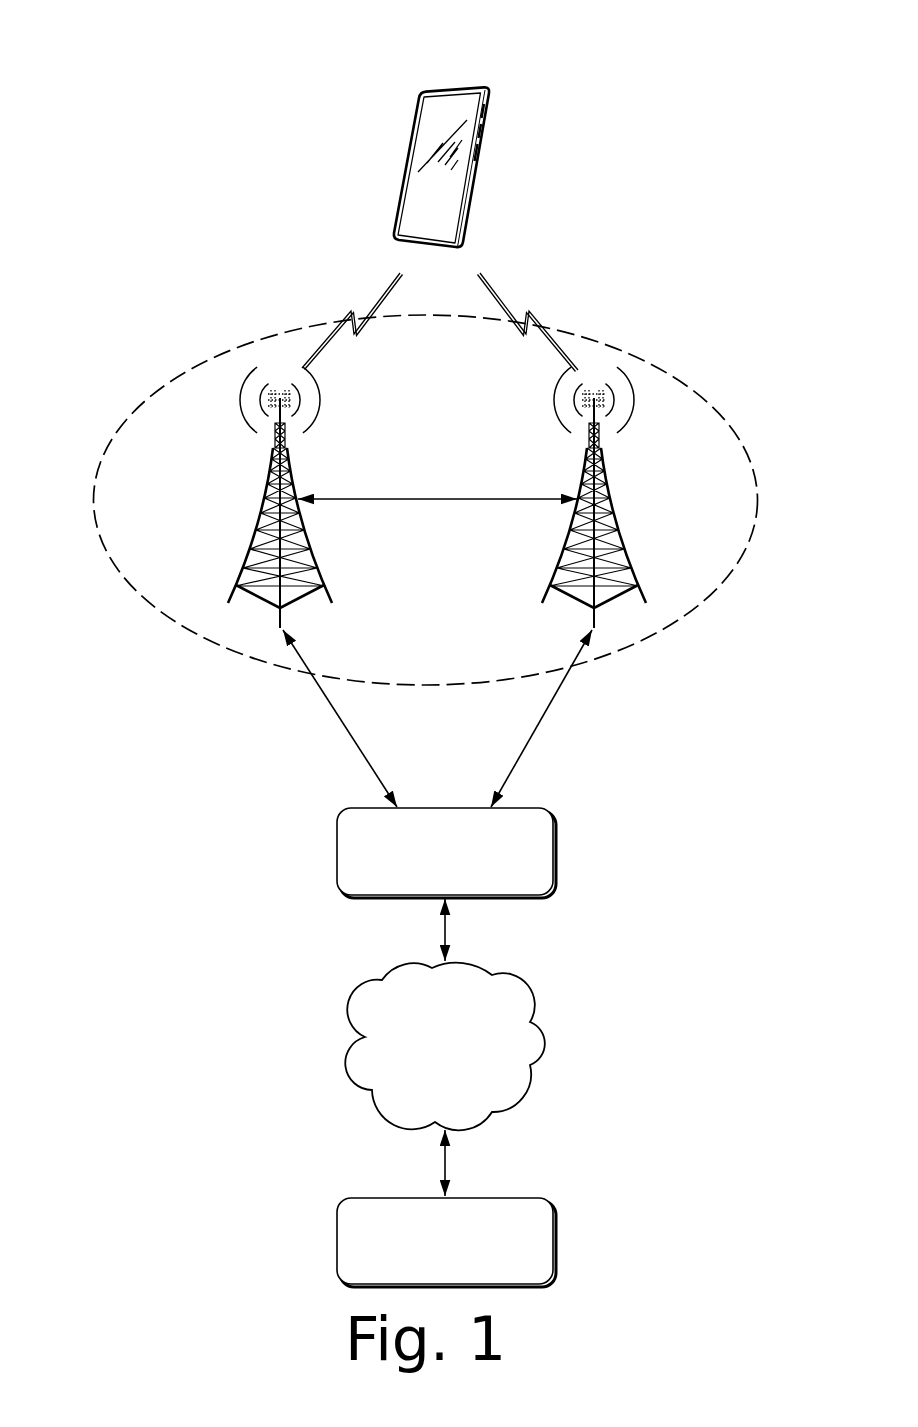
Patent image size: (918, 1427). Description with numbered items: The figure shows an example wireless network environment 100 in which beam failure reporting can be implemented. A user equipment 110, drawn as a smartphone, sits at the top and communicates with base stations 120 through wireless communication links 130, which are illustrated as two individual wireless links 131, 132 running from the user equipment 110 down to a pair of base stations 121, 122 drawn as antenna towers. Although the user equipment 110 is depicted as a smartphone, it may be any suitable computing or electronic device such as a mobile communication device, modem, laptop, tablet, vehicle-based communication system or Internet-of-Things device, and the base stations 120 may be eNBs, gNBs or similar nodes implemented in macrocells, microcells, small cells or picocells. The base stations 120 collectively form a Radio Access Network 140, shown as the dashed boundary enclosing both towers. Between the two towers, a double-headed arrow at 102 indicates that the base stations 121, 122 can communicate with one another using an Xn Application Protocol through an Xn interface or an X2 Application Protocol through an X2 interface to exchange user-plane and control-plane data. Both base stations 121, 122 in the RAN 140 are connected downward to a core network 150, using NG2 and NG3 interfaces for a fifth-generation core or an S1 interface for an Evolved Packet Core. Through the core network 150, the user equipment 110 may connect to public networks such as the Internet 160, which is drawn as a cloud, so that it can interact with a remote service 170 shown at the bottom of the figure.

The environment 100 is at (126, 42).
The user equipment 110 is at (493, 83).
The wireless communication links 130 is at (544, 236).
The wireless link 131 is at (357, 299).
The wireless link 132 is at (526, 299).
The Radio Access Network 140 is at (732, 424).
The base stations 120 is at (166, 561).
The base station 121 is at (269, 478).
The base station 122 is at (605, 478).
The connection 102 is at (406, 494).
The core network 150 is at (427, 876).
The Internet 160 is at (427, 1063).
The remote service 170 is at (427, 1266).